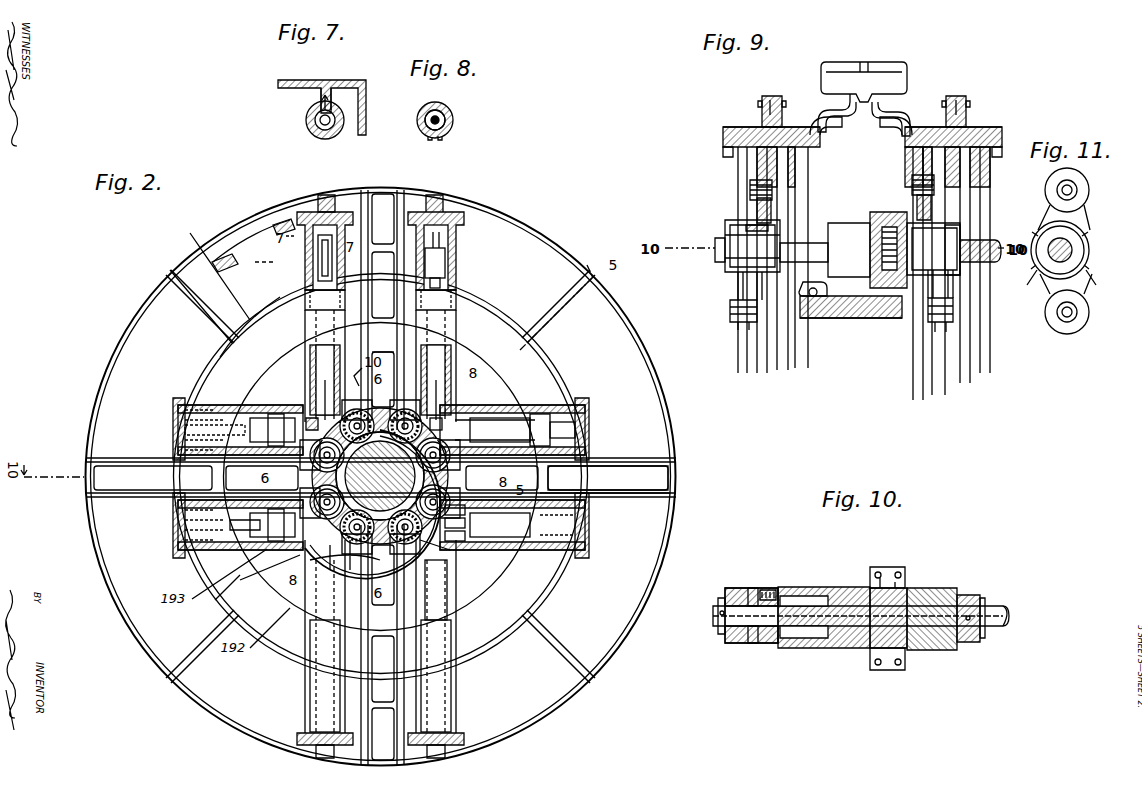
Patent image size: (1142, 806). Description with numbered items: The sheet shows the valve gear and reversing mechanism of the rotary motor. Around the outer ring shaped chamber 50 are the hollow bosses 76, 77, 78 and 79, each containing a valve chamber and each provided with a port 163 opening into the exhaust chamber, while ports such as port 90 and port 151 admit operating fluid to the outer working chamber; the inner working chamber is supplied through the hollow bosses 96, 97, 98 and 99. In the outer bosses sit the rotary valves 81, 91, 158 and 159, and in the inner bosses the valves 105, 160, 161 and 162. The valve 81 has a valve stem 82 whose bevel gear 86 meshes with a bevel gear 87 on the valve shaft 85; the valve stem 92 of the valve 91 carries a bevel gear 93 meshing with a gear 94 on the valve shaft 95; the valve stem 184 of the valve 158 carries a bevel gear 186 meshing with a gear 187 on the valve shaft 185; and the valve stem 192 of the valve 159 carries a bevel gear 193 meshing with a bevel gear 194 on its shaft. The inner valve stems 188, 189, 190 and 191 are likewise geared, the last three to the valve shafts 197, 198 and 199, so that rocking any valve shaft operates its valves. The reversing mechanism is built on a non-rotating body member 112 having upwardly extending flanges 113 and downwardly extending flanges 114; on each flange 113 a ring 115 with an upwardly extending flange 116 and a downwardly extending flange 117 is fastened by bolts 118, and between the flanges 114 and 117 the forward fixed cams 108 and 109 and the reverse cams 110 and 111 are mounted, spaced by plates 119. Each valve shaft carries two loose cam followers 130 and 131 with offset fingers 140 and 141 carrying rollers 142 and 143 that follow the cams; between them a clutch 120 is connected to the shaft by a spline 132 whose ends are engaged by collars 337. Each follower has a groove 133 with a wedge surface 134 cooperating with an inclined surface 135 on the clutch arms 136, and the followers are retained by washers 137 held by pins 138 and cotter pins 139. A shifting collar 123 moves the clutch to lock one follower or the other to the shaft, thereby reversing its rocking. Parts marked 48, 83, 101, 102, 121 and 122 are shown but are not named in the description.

In FIG. 2, the sector rib end 48 is at (230, 273).
In FIG. 2, the outer ring shaped chamber 50 is at (273, 261).
In FIG. 7, the hollow boss 76 is at (304, 119).
In FIG. 2, the hollow boss 76 is at (340, 321).
In FIG. 8, the hollow boss 77 is at (452, 112).
In FIG. 2, the hollow boss 77 is at (442, 352).
In FIG. 2, the hollow boss 78 is at (456, 672).
In FIG. 2, the hollow boss 79 is at (305, 674).
In FIG. 7, the valve 81 is at (315, 131).
In FIG. 2, the valve 81 is at (302, 218).
In FIG. 2, the valve stem 82 is at (325, 380).
In FIG. 2, the cap 83 is at (328, 197).
In FIG. 2, the valve shaft 85 is at (322, 395).
In FIG. 9, the valve shaft 85 is at (983, 237).
In FIG. 11, the valve shaft 85 is at (1068, 246).
In FIG. 2, the bevel gear 86 is at (313, 419).
In FIG. 2, the bevel gear 87 is at (175, 436).
In FIG. 7, the port 90 is at (325, 86).
In FIG. 2, the port 90 is at (230, 281).
In FIG. 2, the valve 91 is at (452, 252).
In FIG. 8, the valve stem 92 is at (444, 122).
In FIG. 2, the valve stem 92 is at (448, 274).
In FIG. 2, the bevel gear 93 is at (447, 388).
In FIG. 2, the gear 94 is at (548, 471).
In FIG. 2, the valve shaft 95 is at (550, 485).
In FIG. 2, the hollow boss 96 is at (520, 412).
In FIG. 2, the hollow boss 97 is at (498, 546).
In FIG. 2, the hollow boss 98 is at (247, 543).
In FIG. 2, the hollow boss 99 is at (268, 408).
In FIG. 2, the rod 101 is at (475, 410).
In FIG. 2, the ring 102 is at (302, 334).
In FIG. 2, the valve 105 is at (545, 427).
In FIG. 9, the fixed cam 108 is at (910, 161).
In FIG. 9, the fixed cam 109 is at (990, 160).
In FIG. 9, the reverse cam 110 is at (813, 156).
In FIG. 9, the reverse cam 111 is at (738, 152).
In FIG. 9, the body member 112 is at (892, 94).
In FIG. 9, the upwardly extending flange 113 is at (776, 104).
In FIG. 9, the downwardly extending flange 114 is at (892, 135).
In FIG. 9, the ring 115 is at (737, 127).
In FIG. 9, the upwardly extending flange 116 is at (772, 97).
In FIG. 9, the downwardly extending flange 117 is at (723, 134).
In FIG. 9, the bolt 118 is at (762, 99).
In FIG. 9, the plate 119 is at (748, 122).
In FIG. 9, the clutch 120 is at (848, 222).
In FIG. 10, the clutch 120 is at (864, 573).
In FIG. 9, the hub 121 is at (880, 254).
In FIG. 10, the hub 121 is at (908, 588).
In FIG. 9, the lug 122 is at (877, 225).
In FIG. 9, the shifting collar 123 is at (858, 320).
In FIG. 9, the cam follower 130 is at (725, 235).
In FIG. 10, the cam follower 130 is at (748, 633).
In FIG. 11, the cam follower 130 is at (1078, 267).
In FIG. 9, the cam follower 131 is at (966, 224).
In FIG. 10, the cam follower 131 is at (953, 595).
In FIG. 10, the spline 132 is at (830, 590).
In FIG. 9, the groove 133 is at (727, 258).
In FIG. 10, the groove 133 is at (734, 589).
In FIG. 11, the groove 133 is at (1050, 240).
In FIG. 9, the inclined or wedge surface 134 is at (748, 225).
In FIG. 10, the inclined or wedge surface 134 is at (768, 590).
In FIG. 9, the inclined surface 135 is at (790, 242).
In FIG. 9, the clutch arm 136 is at (822, 238).
In FIG. 10, the washer 137 is at (976, 598).
In FIG. 10, the pin 138 is at (990, 632).
In FIG. 10, the cotter pin 139 is at (713, 612).
In FIG. 9, the offset finger 140 is at (757, 200).
In FIG. 11, the offset finger 140 is at (1074, 218).
In FIG. 9, the offset finger 141 is at (737, 286).
In FIG. 11, the offset finger 141 is at (1074, 287).
In FIG. 9, the roller 142 is at (750, 184).
In FIG. 11, the roller 142 is at (1080, 182).
In FIG. 9, the roller 143 is at (734, 324).
In FIG. 11, the roller 143 is at (1063, 334).
In FIG. 2, the port 151 is at (440, 230).
In FIG. 2, the valve 158 is at (456, 694).
In FIG. 2, the valve 159 is at (312, 700).
In FIG. 2, the valve 160 is at (590, 534).
In FIG. 2, the valve 161 is at (175, 527).
In FIG. 2, the valve 162 is at (182, 425).
In FIG. 7, the port 163 is at (346, 120).
In FIG. 2, the valve stem 184 is at (435, 580).
In FIG. 2, the valve shaft 185 is at (461, 515).
In FIG. 2, the bevel gear 186 is at (459, 528).
In FIG. 2, the gear 187 is at (463, 502).
In FIG. 2, the valve stem 188 is at (540, 390).
In FIG. 2, the valve stem 189 is at (505, 552).
In FIG. 2, the valve stem 190 is at (262, 544).
In FIG. 2, the valve stem 191 is at (274, 416).
In FIG. 2, the valve stem 192 is at (380, 477).
In FIG. 2, the bevel gear 193 is at (380, 476).
In FIG. 2, the bevel gear 194 is at (380, 476).
In FIG. 2, the valve shaft 197 is at (418, 536).
In FIG. 2, the valve shaft 198 is at (267, 574).
In FIG. 2, the valve shaft 199 is at (381, 342).
In FIG. 10, the collar 337 is at (752, 588).